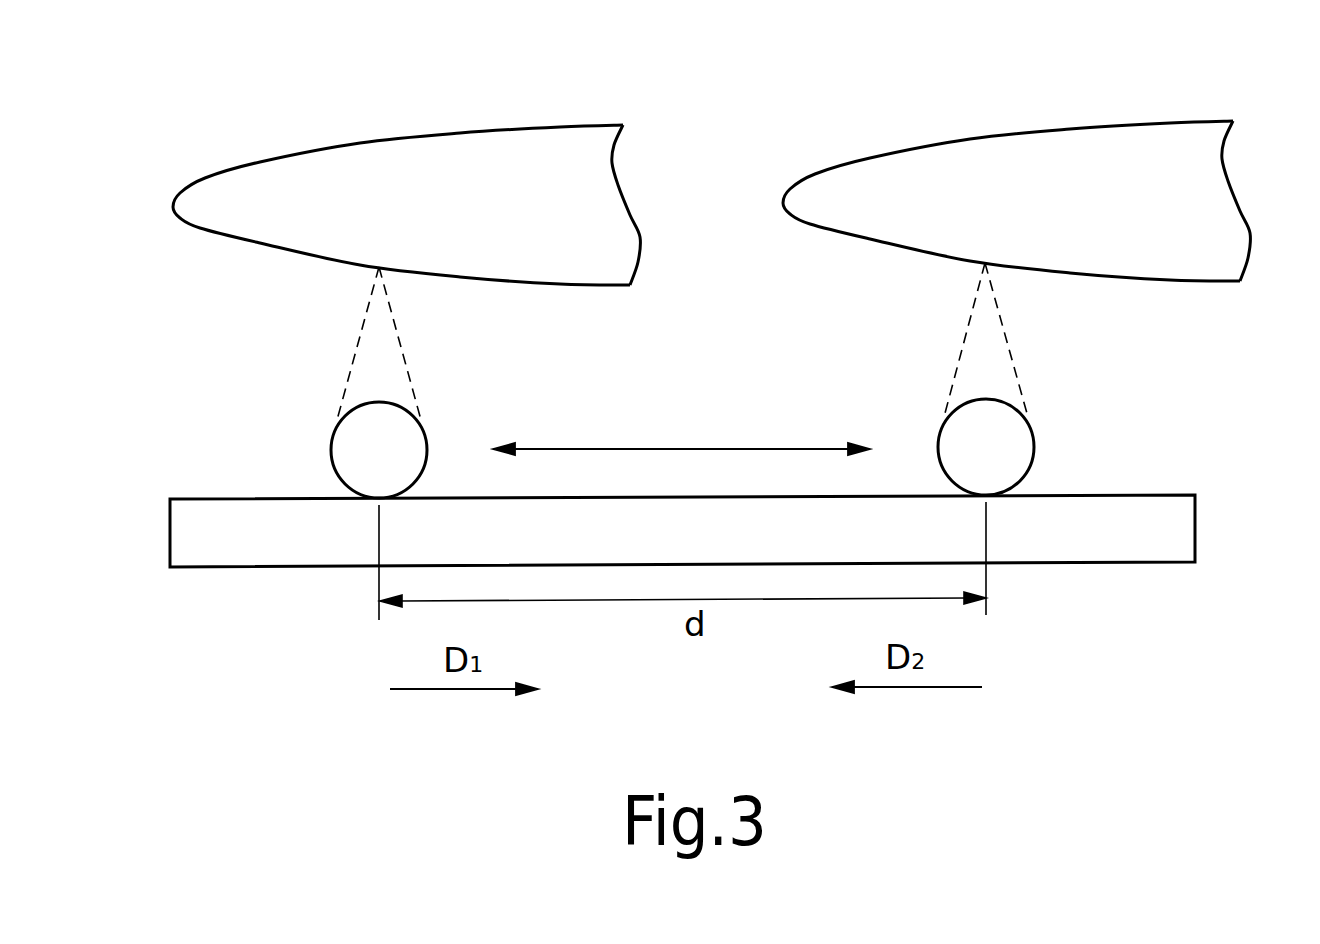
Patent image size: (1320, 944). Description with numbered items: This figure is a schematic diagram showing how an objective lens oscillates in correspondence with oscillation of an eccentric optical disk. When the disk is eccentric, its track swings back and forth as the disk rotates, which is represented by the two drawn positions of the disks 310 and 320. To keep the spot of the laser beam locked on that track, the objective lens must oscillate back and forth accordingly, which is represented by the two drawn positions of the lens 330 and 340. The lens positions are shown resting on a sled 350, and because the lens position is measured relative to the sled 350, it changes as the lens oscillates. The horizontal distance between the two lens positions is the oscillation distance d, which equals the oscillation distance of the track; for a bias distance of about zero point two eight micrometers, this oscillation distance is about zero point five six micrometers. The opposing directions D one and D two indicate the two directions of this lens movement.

The disk 310 is at (557, 126).
The disk 320 is at (1162, 118).
The lens 330 is at (331, 451).
The lens 340 is at (1034, 445).
The sled 350 is at (1197, 526).